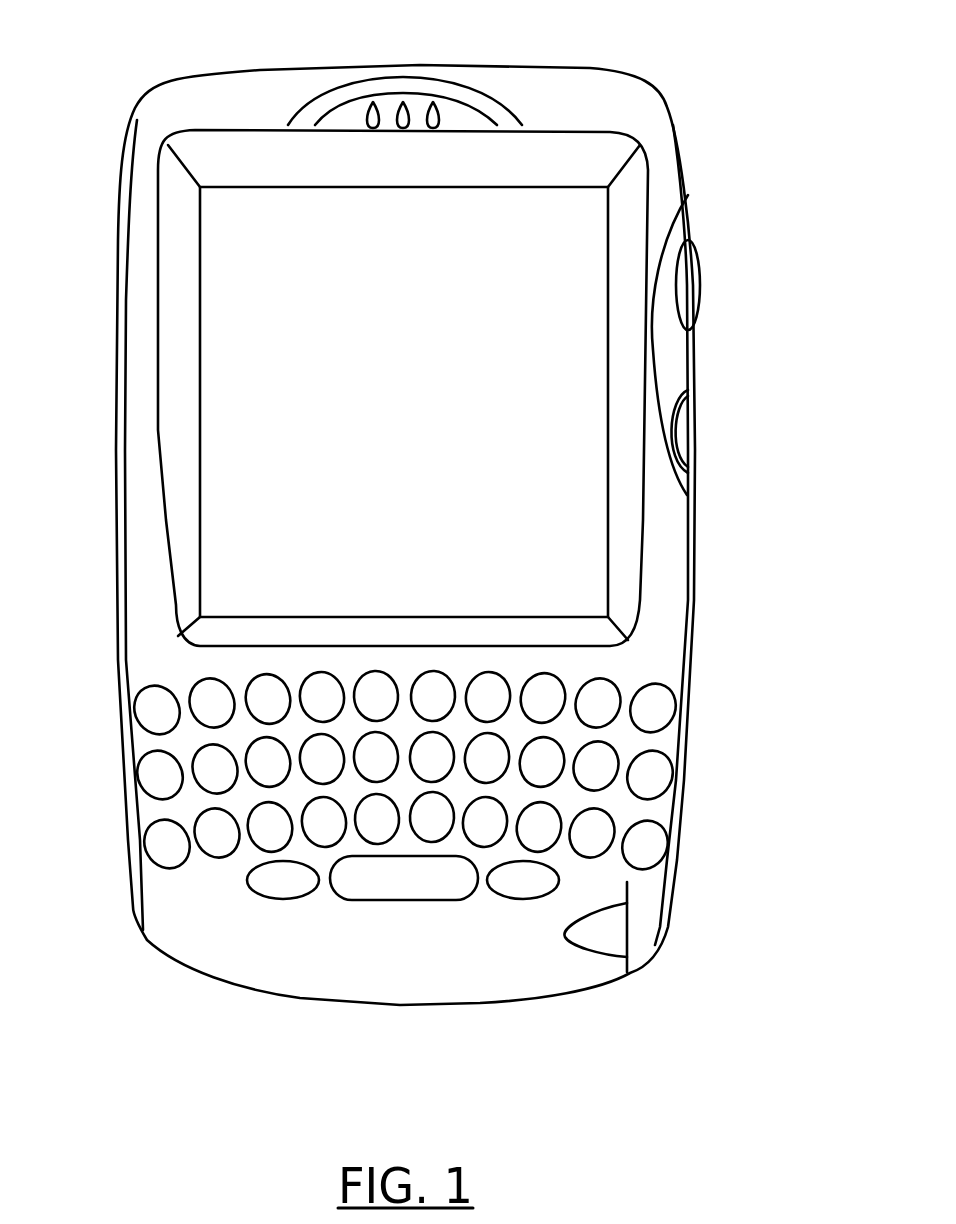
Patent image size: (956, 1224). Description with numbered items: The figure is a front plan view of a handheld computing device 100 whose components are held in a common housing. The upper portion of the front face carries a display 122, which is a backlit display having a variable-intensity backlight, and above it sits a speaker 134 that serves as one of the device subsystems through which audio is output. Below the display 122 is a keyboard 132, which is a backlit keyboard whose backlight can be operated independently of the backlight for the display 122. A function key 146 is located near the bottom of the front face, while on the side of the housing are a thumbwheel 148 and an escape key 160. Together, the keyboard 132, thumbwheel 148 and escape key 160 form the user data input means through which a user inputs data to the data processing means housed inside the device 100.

The handheld computing device 100 is at (101, 126).
The display 122 is at (610, 562).
The speaker 134 is at (403, 128).
The thumbwheel 148 is at (693, 285).
The escape key 160 is at (680, 430).
The keyboard 132 is at (720, 665).
The function key 146 is at (587, 950).